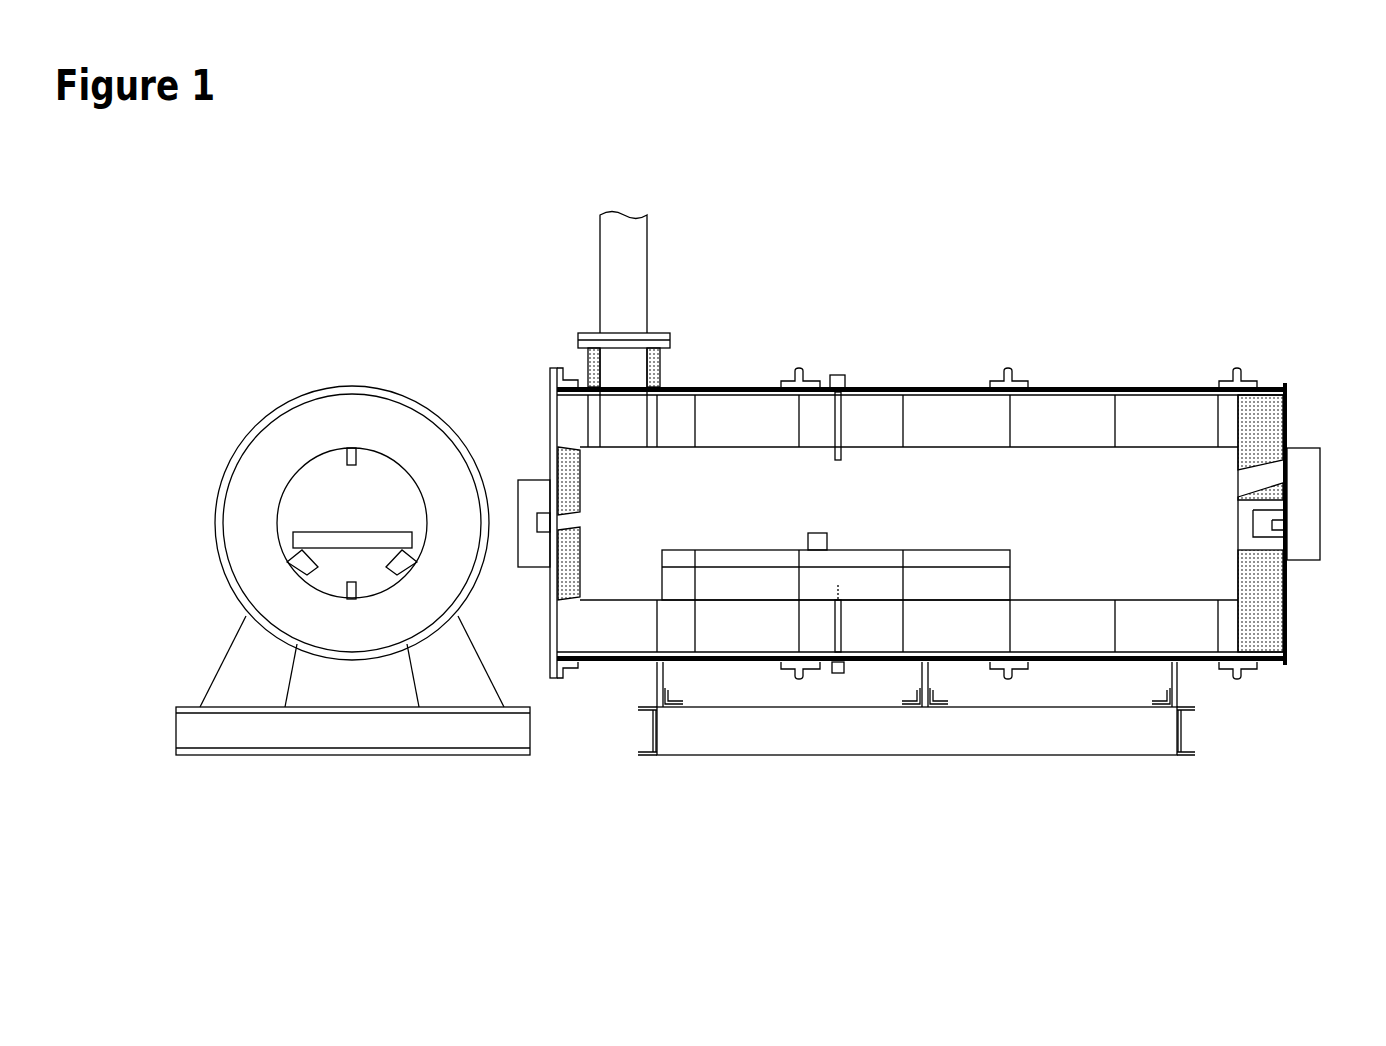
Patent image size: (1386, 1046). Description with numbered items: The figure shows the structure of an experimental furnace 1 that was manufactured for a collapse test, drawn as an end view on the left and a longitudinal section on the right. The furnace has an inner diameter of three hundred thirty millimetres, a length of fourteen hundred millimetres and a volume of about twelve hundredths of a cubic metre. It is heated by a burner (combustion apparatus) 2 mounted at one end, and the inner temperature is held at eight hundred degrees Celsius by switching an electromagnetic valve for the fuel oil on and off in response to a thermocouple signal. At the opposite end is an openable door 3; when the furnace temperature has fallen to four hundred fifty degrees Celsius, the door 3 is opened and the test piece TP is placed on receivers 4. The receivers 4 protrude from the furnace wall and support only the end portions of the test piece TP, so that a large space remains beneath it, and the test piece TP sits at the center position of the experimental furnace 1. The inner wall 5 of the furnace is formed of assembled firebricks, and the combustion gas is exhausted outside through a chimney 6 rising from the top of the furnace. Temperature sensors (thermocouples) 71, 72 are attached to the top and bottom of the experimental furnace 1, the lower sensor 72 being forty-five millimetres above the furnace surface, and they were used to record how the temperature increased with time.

The experimental furnace 1 is at (979, 260).
The burner 2 is at (1290, 522).
The openable door 3 is at (552, 505).
The receiver 4 is at (302, 567).
The inner wall of furnace 5 is at (1155, 417).
The chimney 6 is at (650, 290).
The temperature sensor 71 is at (843, 458).
The temperature sensor 72 is at (840, 673).
The test piece TP is at (374, 528).